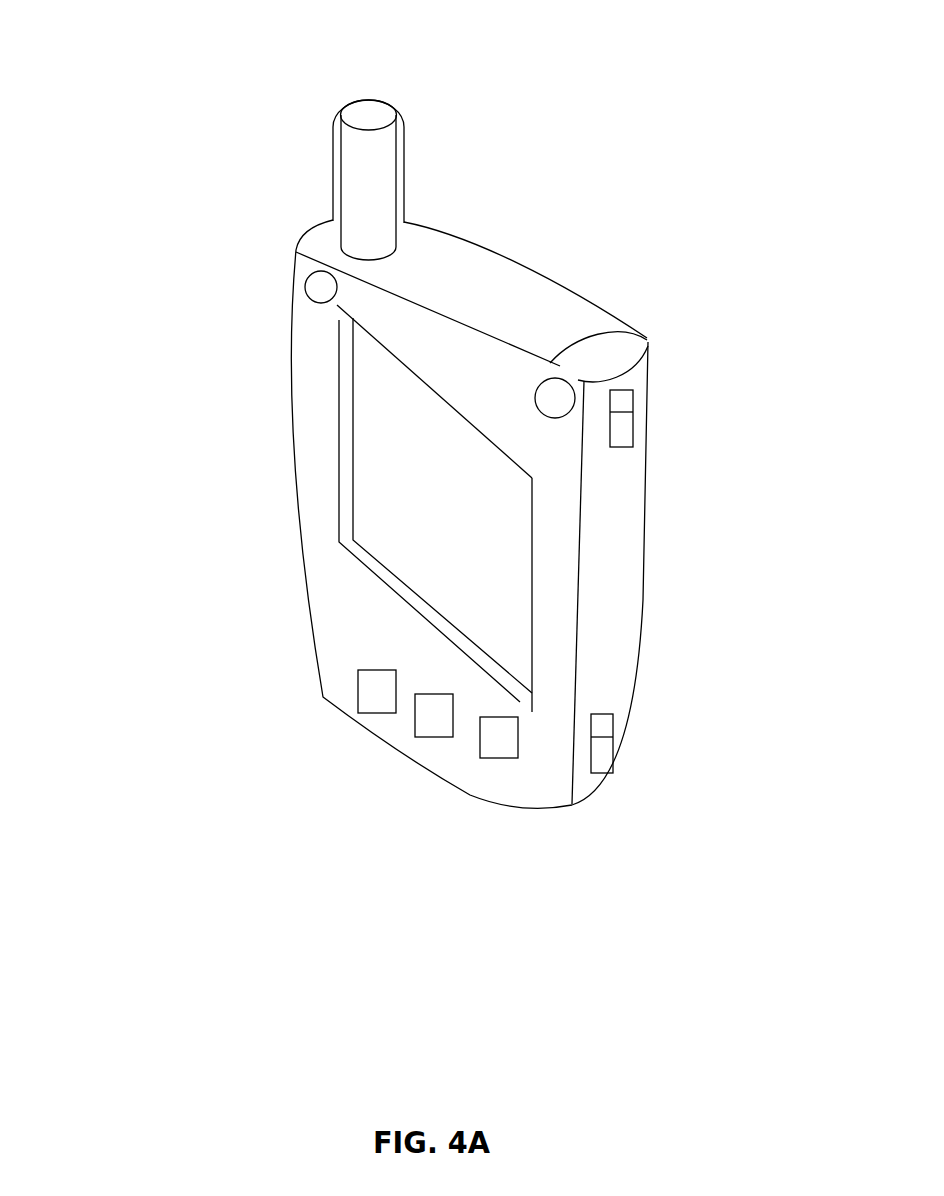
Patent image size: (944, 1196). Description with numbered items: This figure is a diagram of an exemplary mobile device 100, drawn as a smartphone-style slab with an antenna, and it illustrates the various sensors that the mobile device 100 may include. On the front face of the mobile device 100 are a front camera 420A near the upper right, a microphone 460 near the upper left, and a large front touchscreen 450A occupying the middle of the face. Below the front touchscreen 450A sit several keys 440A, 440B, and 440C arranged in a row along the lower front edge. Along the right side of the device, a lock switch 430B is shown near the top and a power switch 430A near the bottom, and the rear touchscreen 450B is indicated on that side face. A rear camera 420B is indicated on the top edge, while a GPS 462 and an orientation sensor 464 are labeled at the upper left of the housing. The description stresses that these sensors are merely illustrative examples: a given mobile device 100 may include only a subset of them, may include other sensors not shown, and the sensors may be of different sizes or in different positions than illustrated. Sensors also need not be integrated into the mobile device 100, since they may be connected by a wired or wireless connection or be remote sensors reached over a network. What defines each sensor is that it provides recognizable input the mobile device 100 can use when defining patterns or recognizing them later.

The mobile device 100 is at (463, 427).
The front camera 420A is at (560, 378).
The rear camera 420B is at (470, 243).
The power switch 430A is at (613, 737).
The lock switch 430B is at (633, 412).
The key 440A is at (347, 717).
The key 440B is at (402, 732).
The key 440C is at (477, 748).
The front touchscreen 450A is at (377, 437).
The rear touchscreen 450B is at (650, 548).
The microphone 460 is at (303, 262).
The GPS 462 is at (307, 317).
The orientation sensor 464 is at (288, 398).